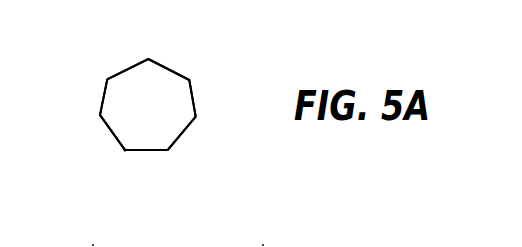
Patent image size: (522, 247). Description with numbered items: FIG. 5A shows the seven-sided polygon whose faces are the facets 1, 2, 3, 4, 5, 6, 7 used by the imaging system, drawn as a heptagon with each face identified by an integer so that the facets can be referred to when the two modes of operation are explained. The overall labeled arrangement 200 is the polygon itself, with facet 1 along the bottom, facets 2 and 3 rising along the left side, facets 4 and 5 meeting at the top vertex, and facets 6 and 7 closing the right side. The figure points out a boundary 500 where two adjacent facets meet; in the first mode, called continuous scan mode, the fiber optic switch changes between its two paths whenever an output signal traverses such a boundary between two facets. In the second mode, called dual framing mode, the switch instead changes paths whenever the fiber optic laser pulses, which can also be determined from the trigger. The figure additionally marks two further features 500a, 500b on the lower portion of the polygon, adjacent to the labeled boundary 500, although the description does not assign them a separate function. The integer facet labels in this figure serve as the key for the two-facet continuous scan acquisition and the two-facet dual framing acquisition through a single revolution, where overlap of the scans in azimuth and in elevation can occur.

The facet 1 is at (146, 142).
The facet 2 is at (113, 132).
The facet 3 is at (107, 97).
The facet 4 is at (127, 73).
The facet 5 is at (168, 74).
The facet 6 is at (185, 98).
The facet 7 is at (182, 133).
The heptagonal arrangement 200 is at (107, 79).
The boundary 500 is at (125, 151).
The side of arrangement 500a is at (112, 133).
The bottom side of arrangement 500b is at (147, 152).